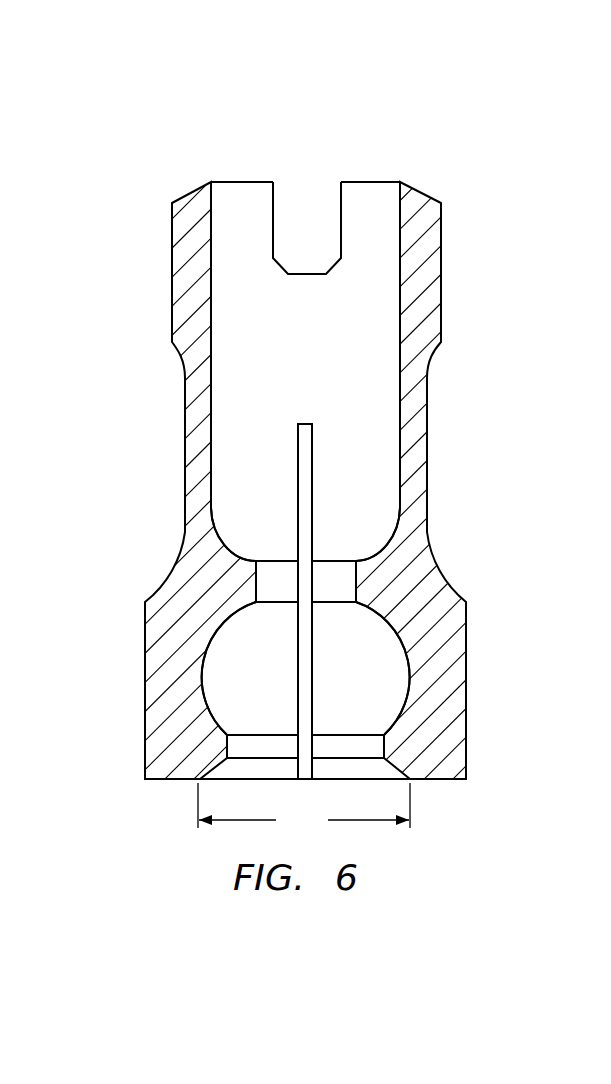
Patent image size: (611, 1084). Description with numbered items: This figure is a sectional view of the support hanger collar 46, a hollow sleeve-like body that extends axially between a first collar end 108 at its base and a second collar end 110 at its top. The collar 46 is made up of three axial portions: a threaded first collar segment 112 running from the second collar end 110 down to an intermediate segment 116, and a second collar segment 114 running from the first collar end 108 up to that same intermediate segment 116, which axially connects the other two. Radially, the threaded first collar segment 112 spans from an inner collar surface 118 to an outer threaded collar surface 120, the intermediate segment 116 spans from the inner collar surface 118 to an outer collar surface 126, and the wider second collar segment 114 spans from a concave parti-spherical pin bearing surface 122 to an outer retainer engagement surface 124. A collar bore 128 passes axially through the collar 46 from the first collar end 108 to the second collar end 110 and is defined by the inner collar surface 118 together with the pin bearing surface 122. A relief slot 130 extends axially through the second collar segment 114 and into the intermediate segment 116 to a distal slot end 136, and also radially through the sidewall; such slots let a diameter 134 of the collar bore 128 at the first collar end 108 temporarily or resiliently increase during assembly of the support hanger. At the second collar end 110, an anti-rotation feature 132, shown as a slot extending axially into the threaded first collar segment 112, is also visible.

The collar 46 is at (521, 199).
The first collar end 108 is at (442, 780).
The second collar end 110 is at (377, 181).
The threaded first collar segment 112 is at (445, 297).
The second collar segment 114 is at (468, 678).
The intermediate segment 116 is at (431, 453).
The inner collar surface 118 is at (211, 202).
The outer threaded collar surface 120 is at (172, 262).
The parti-spherical pin bearing surface 122 is at (203, 663).
The outer retainer engagement surface 124 is at (144, 703).
The outer collar surface 126 is at (185, 458).
The collar bore 128 is at (381, 224).
The relief slot 130 is at (316, 475).
The anti-rotation feature 132 is at (305, 185).
The diameter 134 is at (304, 810).
The distal slot end 136 is at (312, 424).